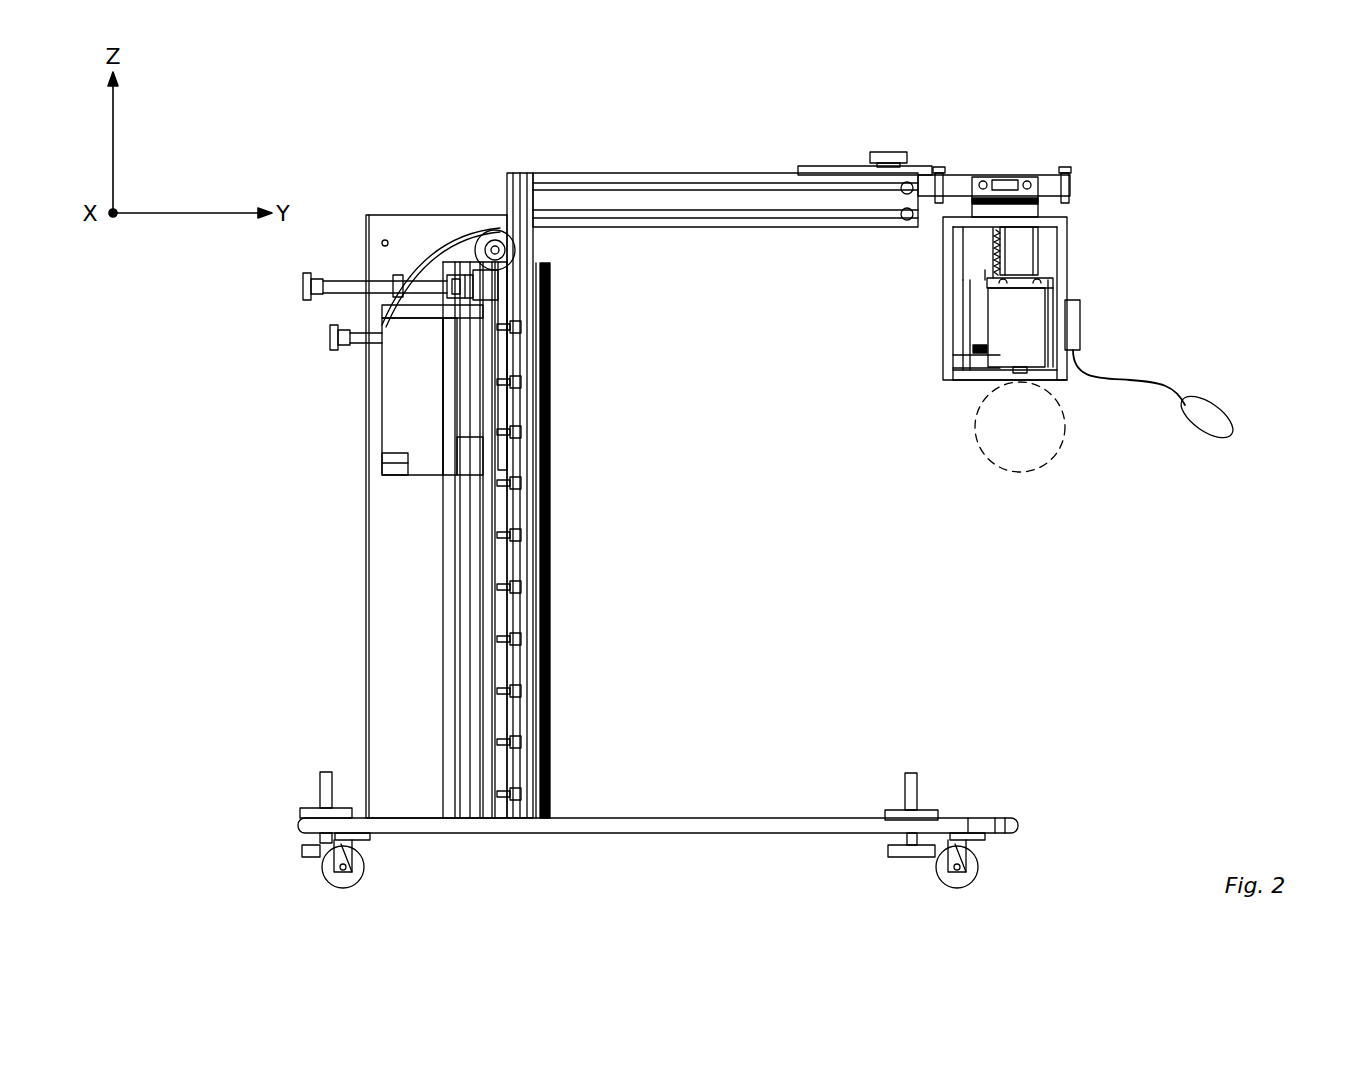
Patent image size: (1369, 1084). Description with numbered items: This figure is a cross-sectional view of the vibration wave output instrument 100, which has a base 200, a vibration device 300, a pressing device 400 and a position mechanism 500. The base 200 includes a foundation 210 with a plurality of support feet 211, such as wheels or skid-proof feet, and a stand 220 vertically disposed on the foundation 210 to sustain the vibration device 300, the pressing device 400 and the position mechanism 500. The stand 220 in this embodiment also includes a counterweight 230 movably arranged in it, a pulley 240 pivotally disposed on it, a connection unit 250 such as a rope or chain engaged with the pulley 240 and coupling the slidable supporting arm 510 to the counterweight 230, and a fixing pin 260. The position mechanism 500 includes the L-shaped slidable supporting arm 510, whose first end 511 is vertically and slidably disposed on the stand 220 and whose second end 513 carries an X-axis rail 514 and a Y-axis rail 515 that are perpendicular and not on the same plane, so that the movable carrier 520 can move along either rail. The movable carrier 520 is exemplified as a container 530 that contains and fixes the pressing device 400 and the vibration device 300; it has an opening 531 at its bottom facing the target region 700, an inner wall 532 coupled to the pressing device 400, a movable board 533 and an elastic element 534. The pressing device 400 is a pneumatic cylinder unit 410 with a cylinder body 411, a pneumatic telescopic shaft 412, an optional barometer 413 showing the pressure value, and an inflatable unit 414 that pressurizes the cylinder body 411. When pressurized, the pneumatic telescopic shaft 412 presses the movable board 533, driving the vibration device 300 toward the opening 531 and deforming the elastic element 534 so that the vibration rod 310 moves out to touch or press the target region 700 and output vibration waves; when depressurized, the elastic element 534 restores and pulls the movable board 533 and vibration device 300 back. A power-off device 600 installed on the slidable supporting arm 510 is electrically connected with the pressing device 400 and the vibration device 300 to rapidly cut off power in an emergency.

The vibration wave output instrument 100 is at (1249, 117).
The base 200 is at (781, 795).
The foundation 210 is at (665, 818).
The support feet 211 is at (358, 868).
The stand 220 is at (395, 680).
The counterweight 230 is at (385, 420).
The pulley 240 is at (493, 235).
The connection unit 250 is at (438, 252).
The fixing pin 260 is at (342, 338).
The vibration device 300 is at (1030, 330).
The vibration rod 310 is at (1020, 375).
The pressing device 400 is at (1044, 240).
The pneumatic cylinder unit 410 is at (1170, 228).
The cylinder body 411 is at (1020, 268).
The pneumatic telescopic shaft 412 is at (1012, 281).
The barometer 413 is at (1073, 320).
The inflatable unit 414 is at (1205, 417).
The position mechanism 500 is at (614, 347).
The slidable supporting arm 510 is at (541, 244).
The first end 511 is at (511, 172).
The second end 513 is at (925, 172).
The X-axis rail 514 is at (1027, 181).
The Y-axis rail 515 is at (1047, 176).
The movable carrier 520 is at (937, 262).
The container 530 is at (965, 333).
The opening 531 is at (1067, 383).
The inner wall 532 is at (968, 222).
The movable board 533 is at (985, 280).
The elastic element 534 is at (993, 258).
The power-off device 600 is at (888, 150).
The target region 700 is at (1056, 440).